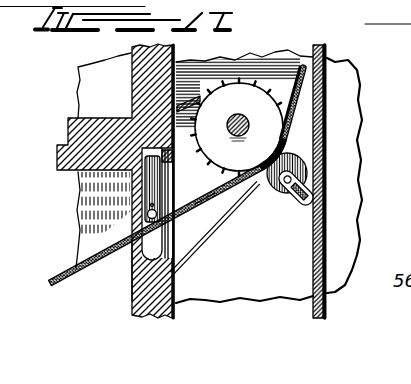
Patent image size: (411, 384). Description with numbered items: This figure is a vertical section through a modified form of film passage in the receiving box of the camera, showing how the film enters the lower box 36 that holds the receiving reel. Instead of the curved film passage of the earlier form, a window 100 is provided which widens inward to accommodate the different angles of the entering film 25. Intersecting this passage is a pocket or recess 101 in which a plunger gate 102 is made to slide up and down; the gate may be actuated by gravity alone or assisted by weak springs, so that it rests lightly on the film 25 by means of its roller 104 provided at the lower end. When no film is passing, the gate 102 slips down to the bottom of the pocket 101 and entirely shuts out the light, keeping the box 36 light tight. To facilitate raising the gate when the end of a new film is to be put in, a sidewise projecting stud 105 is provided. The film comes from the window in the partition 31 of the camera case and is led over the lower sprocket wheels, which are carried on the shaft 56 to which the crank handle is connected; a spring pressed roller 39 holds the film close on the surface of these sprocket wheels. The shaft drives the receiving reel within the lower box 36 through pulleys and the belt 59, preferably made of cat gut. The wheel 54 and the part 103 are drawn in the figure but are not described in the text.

The unexposed film 25 is at (74, 266).
The partition 31 is at (323, 133).
The lower box 36 is at (135, 318).
The spring pressed roller 39 is at (278, 193).
The toothed wheel 54 is at (255, 97).
The shaft 56 is at (246, 123).
The belt 59 is at (221, 232).
The window 100 is at (172, 216).
The pocket 101 is at (131, 268).
The plunger gate 102 is at (163, 182).
The stop 103 is at (168, 160).
The roller 104 is at (148, 216).
The stud 105 is at (202, 172).